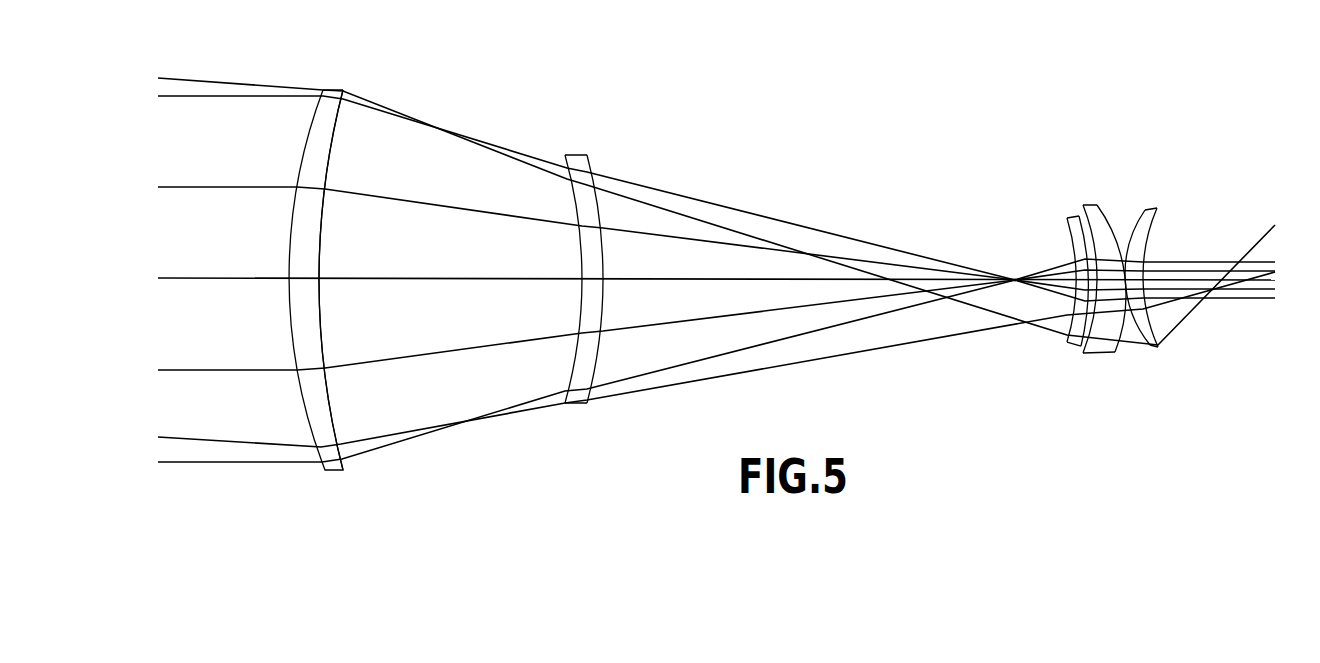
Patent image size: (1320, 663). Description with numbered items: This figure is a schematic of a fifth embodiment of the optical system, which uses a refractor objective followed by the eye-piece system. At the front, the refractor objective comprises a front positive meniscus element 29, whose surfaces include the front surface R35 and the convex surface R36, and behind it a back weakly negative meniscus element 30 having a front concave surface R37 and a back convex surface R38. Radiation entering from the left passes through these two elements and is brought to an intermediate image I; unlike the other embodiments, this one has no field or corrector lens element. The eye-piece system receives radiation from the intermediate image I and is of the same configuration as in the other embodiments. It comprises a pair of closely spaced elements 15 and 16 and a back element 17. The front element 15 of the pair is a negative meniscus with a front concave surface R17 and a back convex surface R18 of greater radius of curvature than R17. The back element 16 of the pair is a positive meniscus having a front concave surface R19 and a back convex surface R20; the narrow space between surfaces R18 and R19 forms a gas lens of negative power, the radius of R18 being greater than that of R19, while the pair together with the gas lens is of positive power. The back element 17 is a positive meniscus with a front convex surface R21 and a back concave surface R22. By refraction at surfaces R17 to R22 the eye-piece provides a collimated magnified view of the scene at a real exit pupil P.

The front positive meniscus element 29 is at (342, 282).
The back weakly negative meniscus element 30 is at (590, 282).
The surface of front meniscus element R35 is at (314, 436).
The convex surface of element 29 R36 is at (340, 432).
The front concave surface of element 30 R37 is at (563, 387).
The back convex surface of element 30 R38 is at (594, 382).
The front element of the pair 15 is at (1065, 300).
The back element of the pair 16 is at (1112, 267).
The back element 17 is at (1181, 284).
The front concave surface R17 is at (1065, 333).
The back convex surface R18 is at (1088, 335).
The front concave surface R19 is at (1084, 230).
The back convex surface R20 is at (1104, 215).
The front convex surface R21 is at (1143, 220).
The back concave surface R22 is at (1155, 238).
The intermediate image I is at (1014, 258).
The real exit pupil P is at (1243, 305).